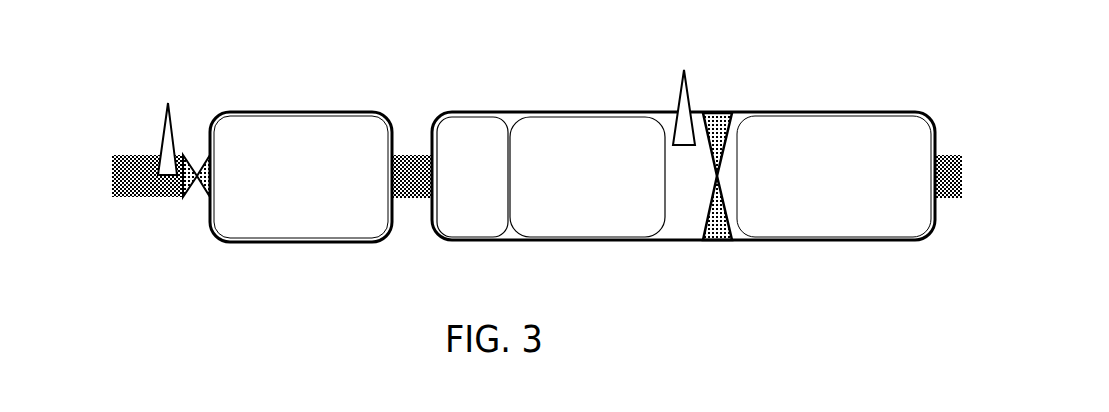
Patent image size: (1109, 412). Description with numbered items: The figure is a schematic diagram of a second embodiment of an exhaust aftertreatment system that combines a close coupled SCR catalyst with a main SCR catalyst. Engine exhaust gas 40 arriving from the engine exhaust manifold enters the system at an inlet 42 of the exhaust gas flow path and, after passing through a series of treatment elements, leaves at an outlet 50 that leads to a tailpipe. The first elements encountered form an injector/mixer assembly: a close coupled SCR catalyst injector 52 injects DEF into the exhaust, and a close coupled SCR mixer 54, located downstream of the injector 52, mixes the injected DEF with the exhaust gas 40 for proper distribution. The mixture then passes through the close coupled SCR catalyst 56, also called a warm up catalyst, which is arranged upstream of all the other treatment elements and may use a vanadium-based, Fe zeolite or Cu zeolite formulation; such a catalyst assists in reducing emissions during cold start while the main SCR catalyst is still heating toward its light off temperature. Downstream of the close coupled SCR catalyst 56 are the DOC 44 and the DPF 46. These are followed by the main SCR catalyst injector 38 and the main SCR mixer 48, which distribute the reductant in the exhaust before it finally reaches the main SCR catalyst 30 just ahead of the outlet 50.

The main SCR catalyst 30 is at (867, 106).
The main SCR catalyst injector 38 is at (673, 86).
The engine exhaust gas 40 is at (108, 180).
The inlet 42 is at (126, 149).
The DOC 44 is at (482, 109).
The DPF 46 is at (612, 111).
The main SCR mixer 48 is at (718, 244).
The outlet 50 is at (961, 149).
The close coupled SCR catalyst injector 52 is at (170, 102).
The close coupled SCR mixer 54 is at (198, 143).
The close coupled SCR catalyst 56 is at (348, 109).